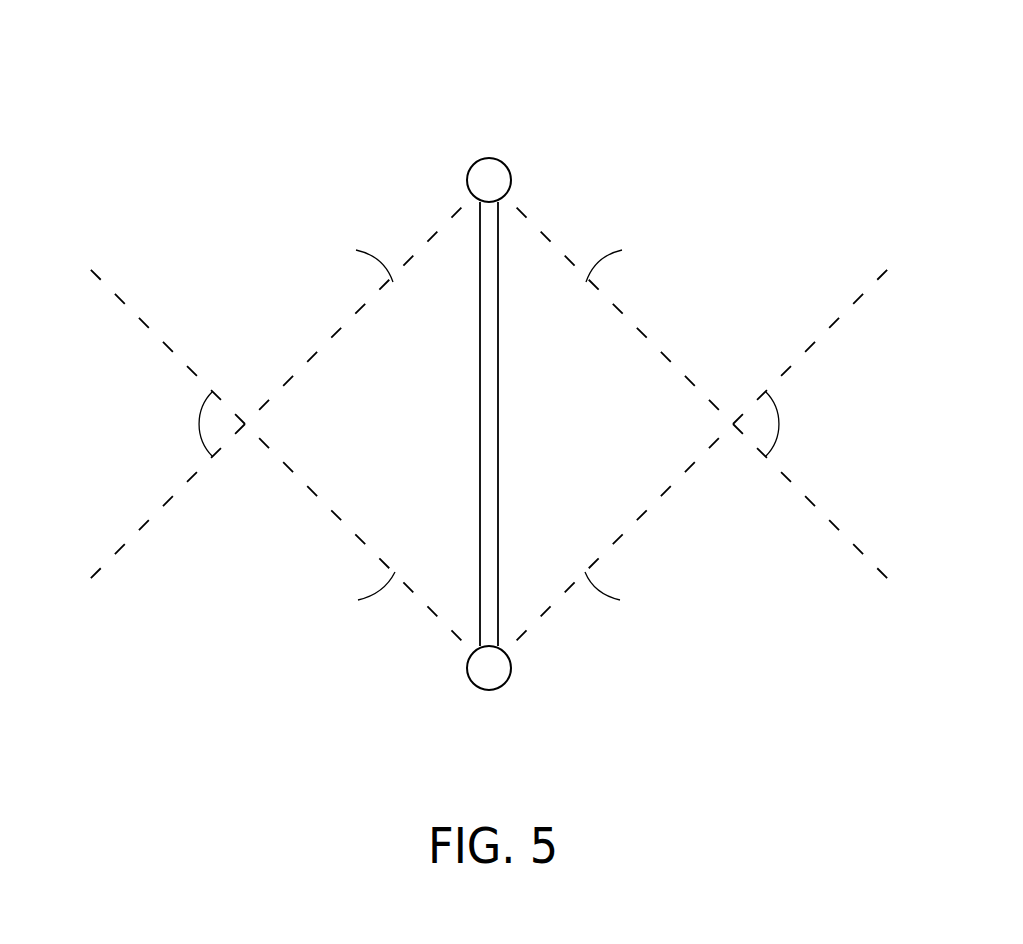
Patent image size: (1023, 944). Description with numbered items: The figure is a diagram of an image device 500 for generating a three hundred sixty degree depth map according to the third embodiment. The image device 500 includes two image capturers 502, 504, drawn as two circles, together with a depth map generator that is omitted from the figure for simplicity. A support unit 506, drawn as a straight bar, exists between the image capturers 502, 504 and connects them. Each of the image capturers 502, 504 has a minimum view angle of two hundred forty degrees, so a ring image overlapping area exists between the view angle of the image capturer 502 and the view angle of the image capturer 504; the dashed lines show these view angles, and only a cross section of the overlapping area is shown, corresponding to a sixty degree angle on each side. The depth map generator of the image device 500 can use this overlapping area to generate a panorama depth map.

The image device 500 is at (535, 370).
The image capturer 502 is at (490, 158).
The image capturer 504 is at (505, 682).
The support unit 506 is at (480, 552).